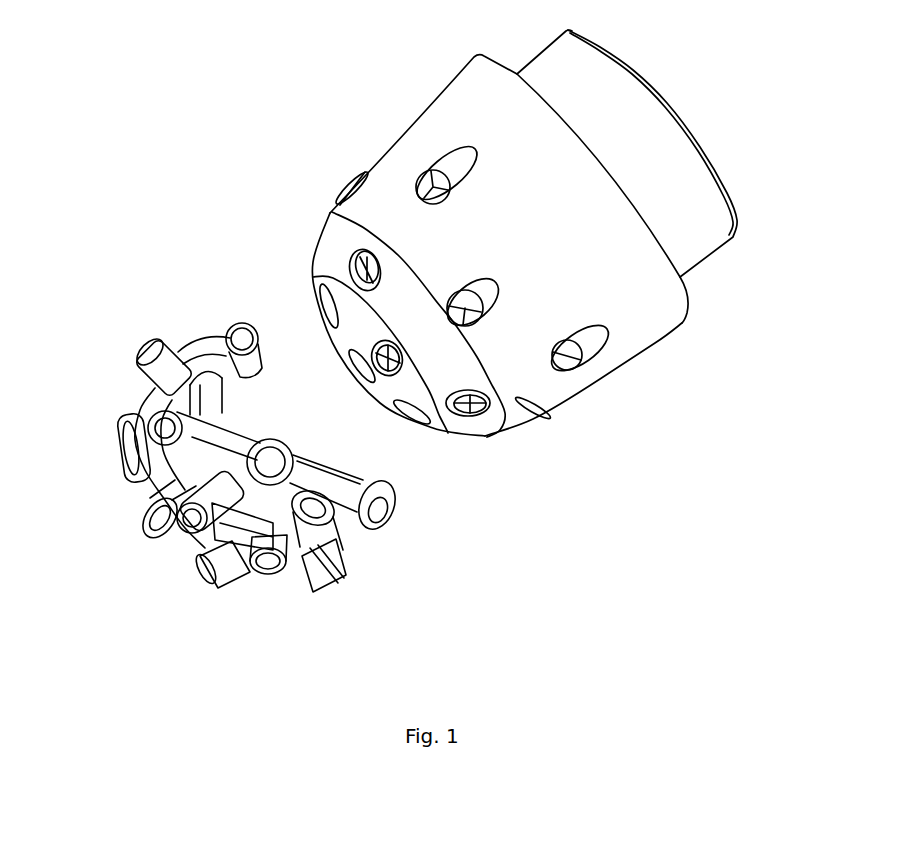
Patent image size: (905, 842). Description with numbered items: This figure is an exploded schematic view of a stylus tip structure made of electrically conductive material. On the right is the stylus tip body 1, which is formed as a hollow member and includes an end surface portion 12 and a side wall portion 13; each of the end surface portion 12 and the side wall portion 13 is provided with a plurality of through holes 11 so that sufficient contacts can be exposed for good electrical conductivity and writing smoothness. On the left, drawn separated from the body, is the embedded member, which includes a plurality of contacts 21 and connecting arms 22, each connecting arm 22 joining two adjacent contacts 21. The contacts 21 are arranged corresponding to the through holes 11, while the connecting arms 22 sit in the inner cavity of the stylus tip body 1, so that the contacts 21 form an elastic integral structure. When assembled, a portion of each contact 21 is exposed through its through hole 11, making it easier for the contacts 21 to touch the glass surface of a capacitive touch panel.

The stylus tip body 1 is at (583, 233).
The side wall portion 13 is at (628, 292).
The through hole 11 is at (577, 363).
The end surface portion 12 is at (427, 402).
The contact 21 is at (147, 340).
The connecting arm 22 is at (303, 553).